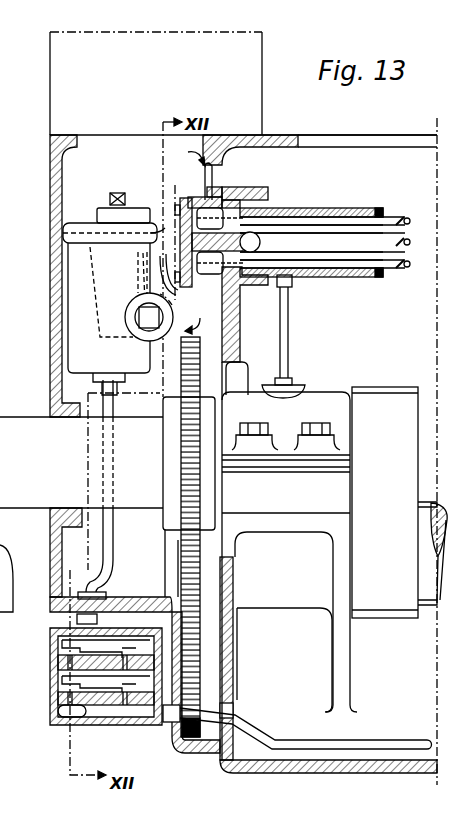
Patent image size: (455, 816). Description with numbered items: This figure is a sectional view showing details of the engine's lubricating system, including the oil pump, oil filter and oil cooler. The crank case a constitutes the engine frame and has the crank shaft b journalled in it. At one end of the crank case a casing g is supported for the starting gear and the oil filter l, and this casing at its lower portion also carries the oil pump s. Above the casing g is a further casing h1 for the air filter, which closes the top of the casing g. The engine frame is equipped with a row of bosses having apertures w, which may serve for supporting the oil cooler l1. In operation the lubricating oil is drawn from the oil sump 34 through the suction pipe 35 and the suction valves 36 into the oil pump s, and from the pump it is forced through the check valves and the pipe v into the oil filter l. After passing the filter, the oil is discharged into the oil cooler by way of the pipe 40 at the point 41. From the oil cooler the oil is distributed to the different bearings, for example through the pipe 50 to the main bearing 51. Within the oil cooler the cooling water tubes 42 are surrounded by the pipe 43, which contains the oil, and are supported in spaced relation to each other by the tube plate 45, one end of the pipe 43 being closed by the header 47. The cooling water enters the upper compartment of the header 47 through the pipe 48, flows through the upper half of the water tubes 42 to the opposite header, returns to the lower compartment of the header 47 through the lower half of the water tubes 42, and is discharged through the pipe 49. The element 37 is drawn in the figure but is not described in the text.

The oil sump 34 is at (392, 717).
The suction pipe 35 is at (268, 740).
The suction valves 36 is at (62, 681).
The upper contact 37 is at (62, 645).
The pipe 40 is at (167, 243).
The oil cooler inlet 41 is at (267, 249).
The cooling water tubes 42 is at (404, 262).
The pipe 43 is at (376, 280).
The tube plate 45 is at (225, 227).
The header 47 is at (240, 303).
The pipe 48 is at (205, 187).
The pipe 49 is at (162, 297).
The pipe 50 is at (288, 336).
The main bearing 51 is at (289, 552).
The casing h1 is at (156, 83).
The crank case a is at (347, 140).
The apertures w is at (262, 188).
The oil cooler l1 is at (330, 213).
The oil filter l is at (107, 262).
The casing g is at (58, 295).
The crank shaft b is at (399, 502).
The pipe v is at (108, 545).
The oil pump s is at (50, 696).